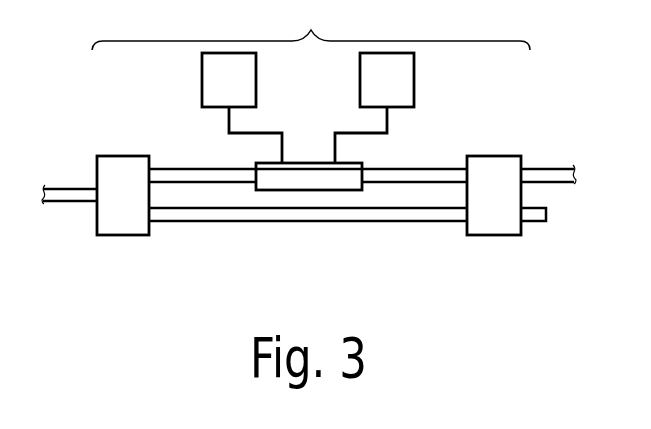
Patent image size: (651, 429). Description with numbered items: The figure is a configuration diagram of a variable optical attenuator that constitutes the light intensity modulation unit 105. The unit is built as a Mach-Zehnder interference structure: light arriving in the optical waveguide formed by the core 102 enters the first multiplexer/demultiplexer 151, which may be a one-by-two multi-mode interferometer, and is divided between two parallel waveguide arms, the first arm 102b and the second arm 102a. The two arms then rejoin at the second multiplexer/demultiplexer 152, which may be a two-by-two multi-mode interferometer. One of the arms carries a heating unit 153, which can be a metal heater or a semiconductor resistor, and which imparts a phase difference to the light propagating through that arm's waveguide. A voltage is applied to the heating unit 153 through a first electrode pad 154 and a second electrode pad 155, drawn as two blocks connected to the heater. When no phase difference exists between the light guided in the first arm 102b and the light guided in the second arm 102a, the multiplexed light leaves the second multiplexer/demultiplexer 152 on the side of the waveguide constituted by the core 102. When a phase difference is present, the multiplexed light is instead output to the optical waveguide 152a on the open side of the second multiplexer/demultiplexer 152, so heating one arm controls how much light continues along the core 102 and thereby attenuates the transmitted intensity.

The light intensity modulation unit 105 is at (311, 97).
The first electrode pad 154 is at (202, 80).
The second electrode pad 155 is at (414, 80).
The heating unit 153 is at (308, 163).
The first multiplexer/demultiplexer 151 is at (122, 156).
The second multiplexer/demultiplexer 152 is at (493, 156).
The optical waveguide on the open side 152a is at (535, 222).
The core 102 is at (66, 189).
The second arm 102a is at (194, 169).
The first arm 102b is at (206, 222).